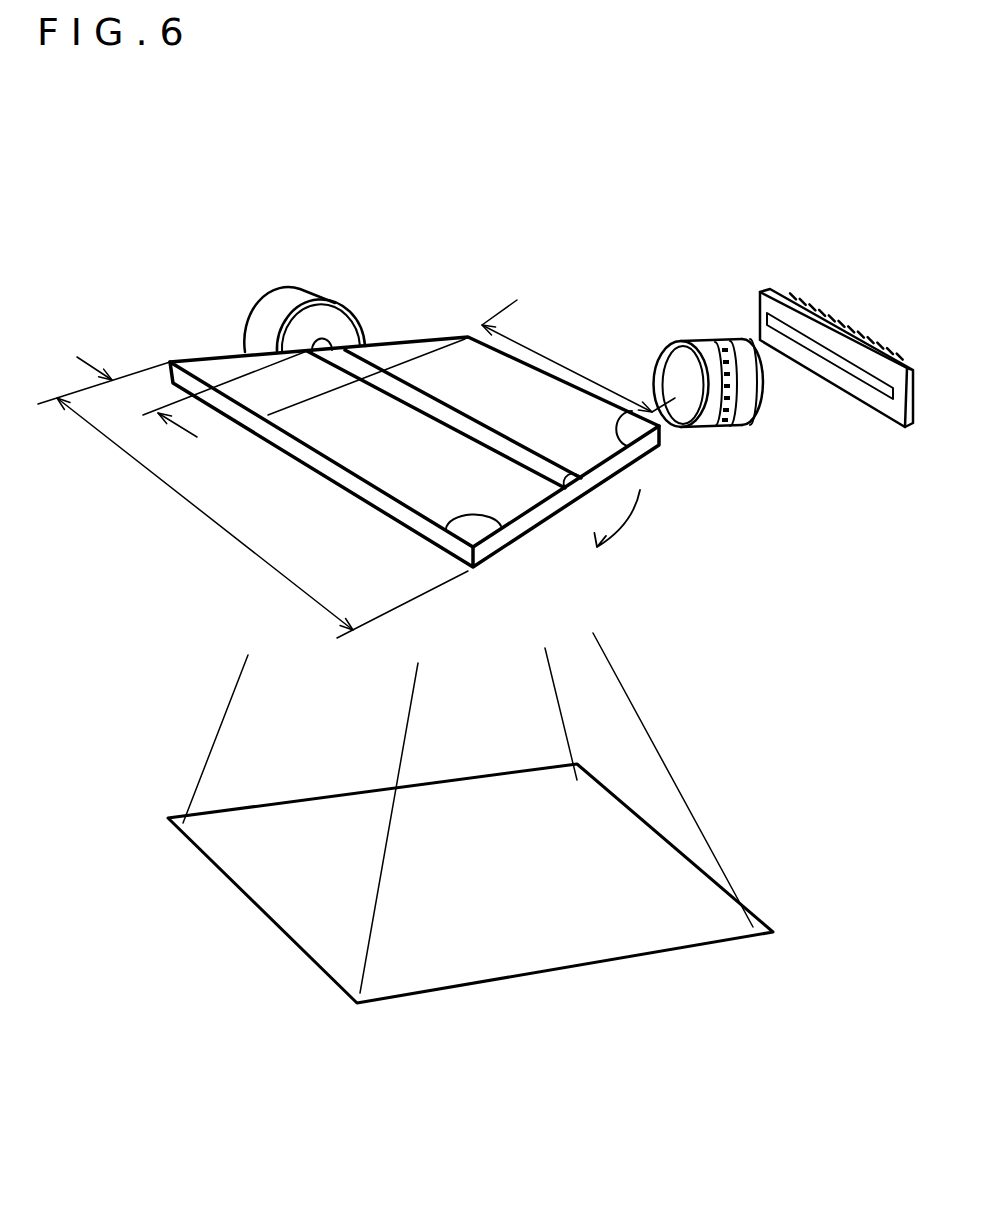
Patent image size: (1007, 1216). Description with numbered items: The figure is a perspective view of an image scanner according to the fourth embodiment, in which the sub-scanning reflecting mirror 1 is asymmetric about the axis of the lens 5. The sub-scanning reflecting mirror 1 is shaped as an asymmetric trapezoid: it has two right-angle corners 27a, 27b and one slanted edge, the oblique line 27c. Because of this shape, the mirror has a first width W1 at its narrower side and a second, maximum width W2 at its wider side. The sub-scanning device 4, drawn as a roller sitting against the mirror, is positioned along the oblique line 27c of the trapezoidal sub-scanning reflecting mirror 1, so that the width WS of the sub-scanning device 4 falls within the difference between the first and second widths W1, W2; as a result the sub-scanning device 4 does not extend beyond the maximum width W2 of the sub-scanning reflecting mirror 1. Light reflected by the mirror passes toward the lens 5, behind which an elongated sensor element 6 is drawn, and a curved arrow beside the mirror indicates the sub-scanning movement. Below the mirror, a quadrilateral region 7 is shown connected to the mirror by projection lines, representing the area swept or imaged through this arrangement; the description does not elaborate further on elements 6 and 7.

The sub-scanning reflecting mirror 1 is at (419, 328).
The sub-scanning device 4 is at (283, 300).
The lens 5 is at (727, 425).
The image sensor (CCD) 6 is at (835, 390).
The projected image area 7 is at (637, 935).
The right-angle corner 27a is at (473, 510).
The right-angle corner 27b is at (620, 430).
The oblique line 27c is at (210, 357).
The first width W1 is at (577, 365).
The second width W2 is at (173, 490).
The width of the sub-scanning device WS is at (131, 397).